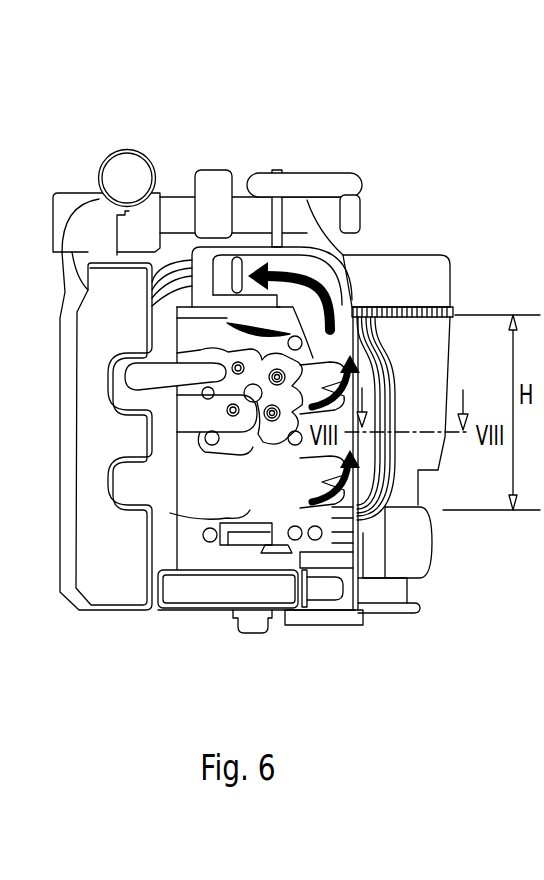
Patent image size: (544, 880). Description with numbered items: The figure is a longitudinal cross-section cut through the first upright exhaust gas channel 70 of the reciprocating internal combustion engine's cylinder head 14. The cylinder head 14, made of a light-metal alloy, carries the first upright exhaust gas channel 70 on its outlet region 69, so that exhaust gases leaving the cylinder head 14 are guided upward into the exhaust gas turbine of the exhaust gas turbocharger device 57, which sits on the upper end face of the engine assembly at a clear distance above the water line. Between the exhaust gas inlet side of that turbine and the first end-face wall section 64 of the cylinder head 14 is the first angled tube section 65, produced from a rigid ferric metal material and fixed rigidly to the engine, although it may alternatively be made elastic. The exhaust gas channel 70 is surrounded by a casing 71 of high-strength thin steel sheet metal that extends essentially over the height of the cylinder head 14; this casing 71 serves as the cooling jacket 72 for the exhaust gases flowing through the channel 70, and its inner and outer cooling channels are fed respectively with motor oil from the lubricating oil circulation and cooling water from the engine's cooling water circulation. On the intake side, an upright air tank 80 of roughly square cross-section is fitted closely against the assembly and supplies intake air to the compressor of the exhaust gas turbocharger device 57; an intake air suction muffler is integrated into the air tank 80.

The cylinder head 14 is at (195, 553).
The exhaust gas turbocharger device 57 is at (223, 152).
The first end-face wall section 64 is at (181, 292).
The first angled tube section 65 is at (283, 245).
The outlet region 69 is at (332, 378).
The first upright exhaust gas channel 70 is at (363, 460).
The casing 71 is at (384, 310).
The cooling jacket 72 is at (390, 490).
The air tank 80 is at (91, 617).